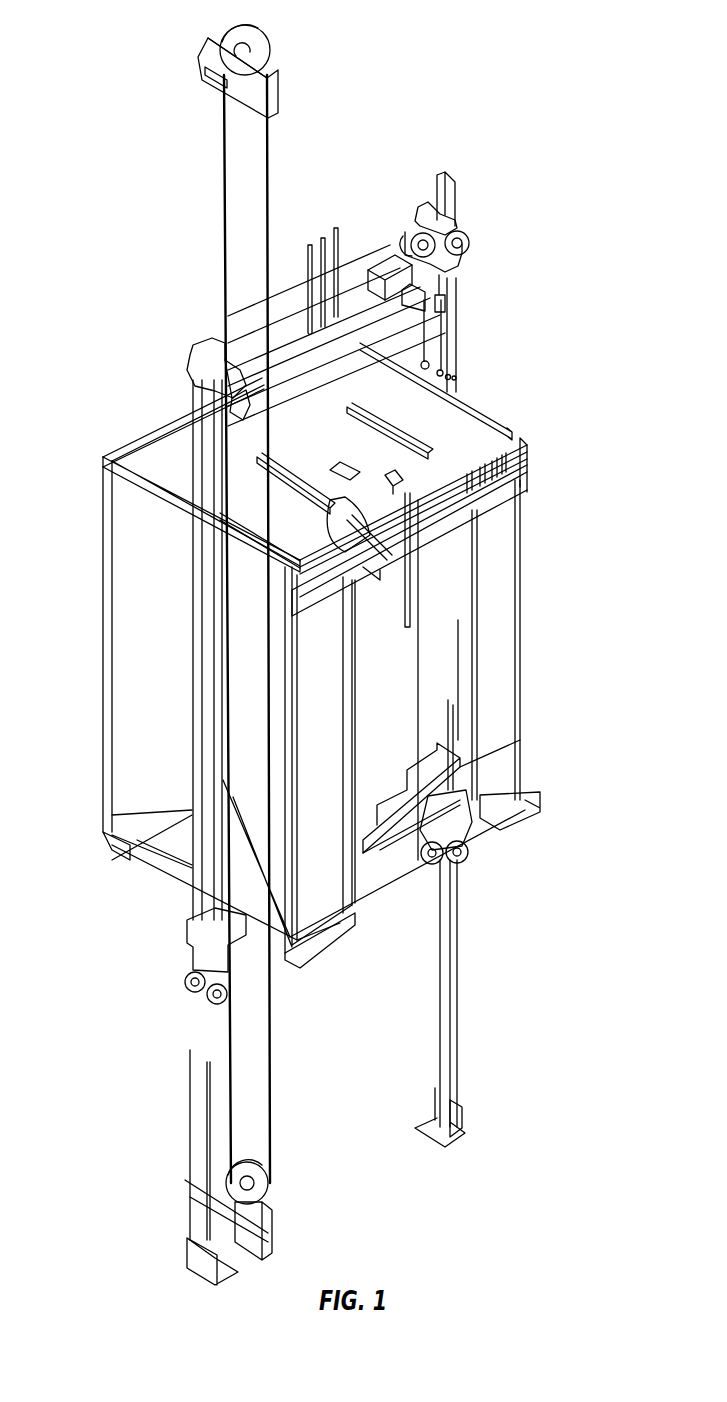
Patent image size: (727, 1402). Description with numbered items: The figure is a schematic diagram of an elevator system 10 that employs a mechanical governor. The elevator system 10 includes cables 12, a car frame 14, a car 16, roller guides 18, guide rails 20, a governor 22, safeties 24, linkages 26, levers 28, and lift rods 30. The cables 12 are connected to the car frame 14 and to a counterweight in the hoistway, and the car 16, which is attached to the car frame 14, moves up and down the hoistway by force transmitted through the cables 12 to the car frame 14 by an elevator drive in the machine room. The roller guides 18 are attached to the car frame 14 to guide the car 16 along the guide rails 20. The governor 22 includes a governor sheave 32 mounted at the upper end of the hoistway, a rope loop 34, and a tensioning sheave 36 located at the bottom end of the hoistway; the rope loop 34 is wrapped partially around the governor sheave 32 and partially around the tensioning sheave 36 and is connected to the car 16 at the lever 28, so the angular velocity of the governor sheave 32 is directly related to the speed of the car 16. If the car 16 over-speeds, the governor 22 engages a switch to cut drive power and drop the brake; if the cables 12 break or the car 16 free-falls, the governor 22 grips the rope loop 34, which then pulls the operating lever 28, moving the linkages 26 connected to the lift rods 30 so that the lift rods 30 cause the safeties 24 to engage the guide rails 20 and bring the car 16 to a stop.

The elevator system 10 is at (525, 130).
The cables 12 is at (340, 258).
The car frame 14 is at (458, 338).
The car 16 is at (503, 578).
The roller guides 18 is at (445, 222).
The guide rails 20 is at (458, 1071).
The governor 22 is at (280, 86).
The safeties 24 is at (423, 826).
The linkages 26 is at (400, 338).
The levers 28 is at (460, 276).
The lift rods 30 is at (213, 608).
The governor sheave 32 is at (268, 51).
The rope loop 34 is at (224, 236).
The tensioning sheave 36 is at (268, 1186).